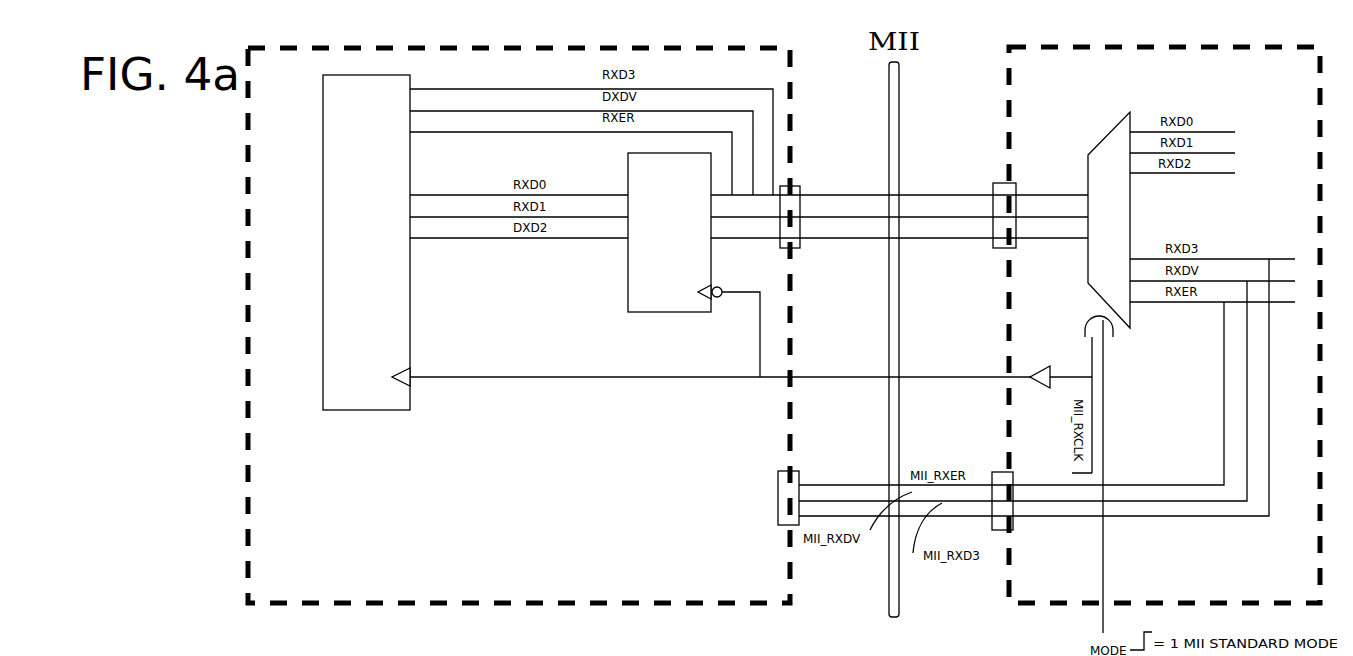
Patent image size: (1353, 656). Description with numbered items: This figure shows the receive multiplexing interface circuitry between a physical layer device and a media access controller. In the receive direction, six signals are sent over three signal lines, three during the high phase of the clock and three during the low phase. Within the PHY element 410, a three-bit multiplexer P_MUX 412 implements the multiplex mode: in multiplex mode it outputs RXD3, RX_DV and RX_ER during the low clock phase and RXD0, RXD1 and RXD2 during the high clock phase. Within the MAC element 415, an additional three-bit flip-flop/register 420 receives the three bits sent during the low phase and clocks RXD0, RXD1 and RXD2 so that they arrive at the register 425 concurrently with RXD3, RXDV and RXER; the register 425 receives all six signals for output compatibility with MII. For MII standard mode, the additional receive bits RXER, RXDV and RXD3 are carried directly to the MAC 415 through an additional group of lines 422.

The PHY element 410 is at (1247, 88).
The P_MUX 412 is at (1130, 226).
The MAC element 415 is at (521, 572).
The three bit flip-flop/register 420 is at (672, 312).
The additional group of lines 422 is at (802, 471).
The register 425 is at (410, 332).